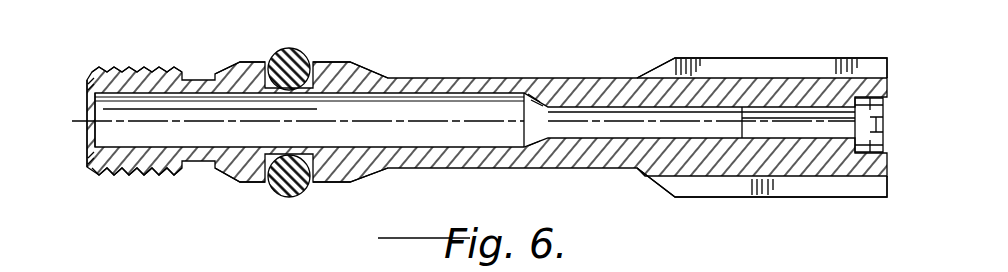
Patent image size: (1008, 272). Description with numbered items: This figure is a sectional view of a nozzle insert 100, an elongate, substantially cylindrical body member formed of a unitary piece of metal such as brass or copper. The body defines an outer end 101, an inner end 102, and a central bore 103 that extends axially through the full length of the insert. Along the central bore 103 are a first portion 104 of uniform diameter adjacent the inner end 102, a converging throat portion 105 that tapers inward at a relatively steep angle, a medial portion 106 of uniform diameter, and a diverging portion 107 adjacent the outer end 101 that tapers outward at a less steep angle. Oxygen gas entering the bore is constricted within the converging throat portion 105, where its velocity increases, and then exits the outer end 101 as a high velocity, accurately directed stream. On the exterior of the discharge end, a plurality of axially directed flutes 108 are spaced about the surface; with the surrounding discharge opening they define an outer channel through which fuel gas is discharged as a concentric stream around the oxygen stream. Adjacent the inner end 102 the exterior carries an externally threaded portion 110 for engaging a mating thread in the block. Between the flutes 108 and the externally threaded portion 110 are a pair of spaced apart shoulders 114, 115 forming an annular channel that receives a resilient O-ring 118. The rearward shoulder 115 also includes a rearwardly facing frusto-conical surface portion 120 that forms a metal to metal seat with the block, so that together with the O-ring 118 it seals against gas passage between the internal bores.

The nozzle insert 100 is at (612, 64).
The outer end 101 is at (888, 84).
The inner end 102 is at (87, 80).
The central bore 103 is at (413, 147).
The first portion 104 is at (365, 152).
The converging throat portion 105 is at (533, 150).
The medial portion 106 is at (657, 152).
The diverging portion 107 is at (798, 138).
The flutes 108 is at (705, 63).
The externally threaded portion 110 is at (137, 67).
The shoulder 114 is at (330, 62).
The rearward shoulder 115 is at (248, 62).
The O-ring 118 is at (293, 49).
The frusto-conical surface portion 120 is at (225, 179).